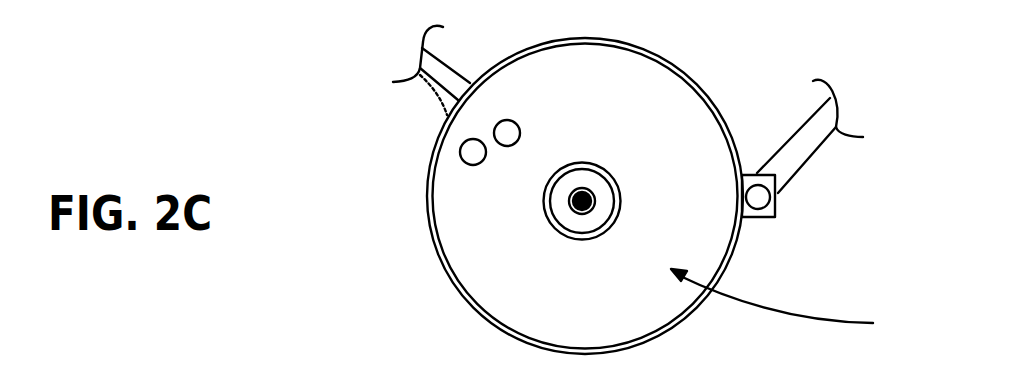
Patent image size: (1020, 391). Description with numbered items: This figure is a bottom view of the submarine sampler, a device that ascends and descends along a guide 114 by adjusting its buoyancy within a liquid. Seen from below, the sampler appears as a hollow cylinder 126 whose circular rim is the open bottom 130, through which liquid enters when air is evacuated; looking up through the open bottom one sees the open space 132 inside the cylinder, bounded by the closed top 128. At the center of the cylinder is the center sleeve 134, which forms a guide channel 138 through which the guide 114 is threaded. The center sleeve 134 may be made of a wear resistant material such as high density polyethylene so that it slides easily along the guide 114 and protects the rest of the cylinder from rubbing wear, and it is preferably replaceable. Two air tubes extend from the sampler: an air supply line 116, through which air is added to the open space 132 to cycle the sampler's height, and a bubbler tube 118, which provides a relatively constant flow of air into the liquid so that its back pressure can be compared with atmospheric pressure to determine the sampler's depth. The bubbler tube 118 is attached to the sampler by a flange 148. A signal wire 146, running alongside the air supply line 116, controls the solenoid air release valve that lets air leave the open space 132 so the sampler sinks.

The guide 114 is at (570, 210).
The air supply line 116 is at (435, 62).
The bubbler tube 118 is at (792, 148).
The hollow cylinder 126 is at (435, 250).
The closed top 128 is at (467, 125).
The open bottom 130 is at (797, 302).
The open space 132 is at (480, 207).
The center sleeve 134 is at (588, 177).
The guide channel 138 is at (583, 215).
The signal wire 146 is at (443, 100).
The flange 148 is at (775, 216).